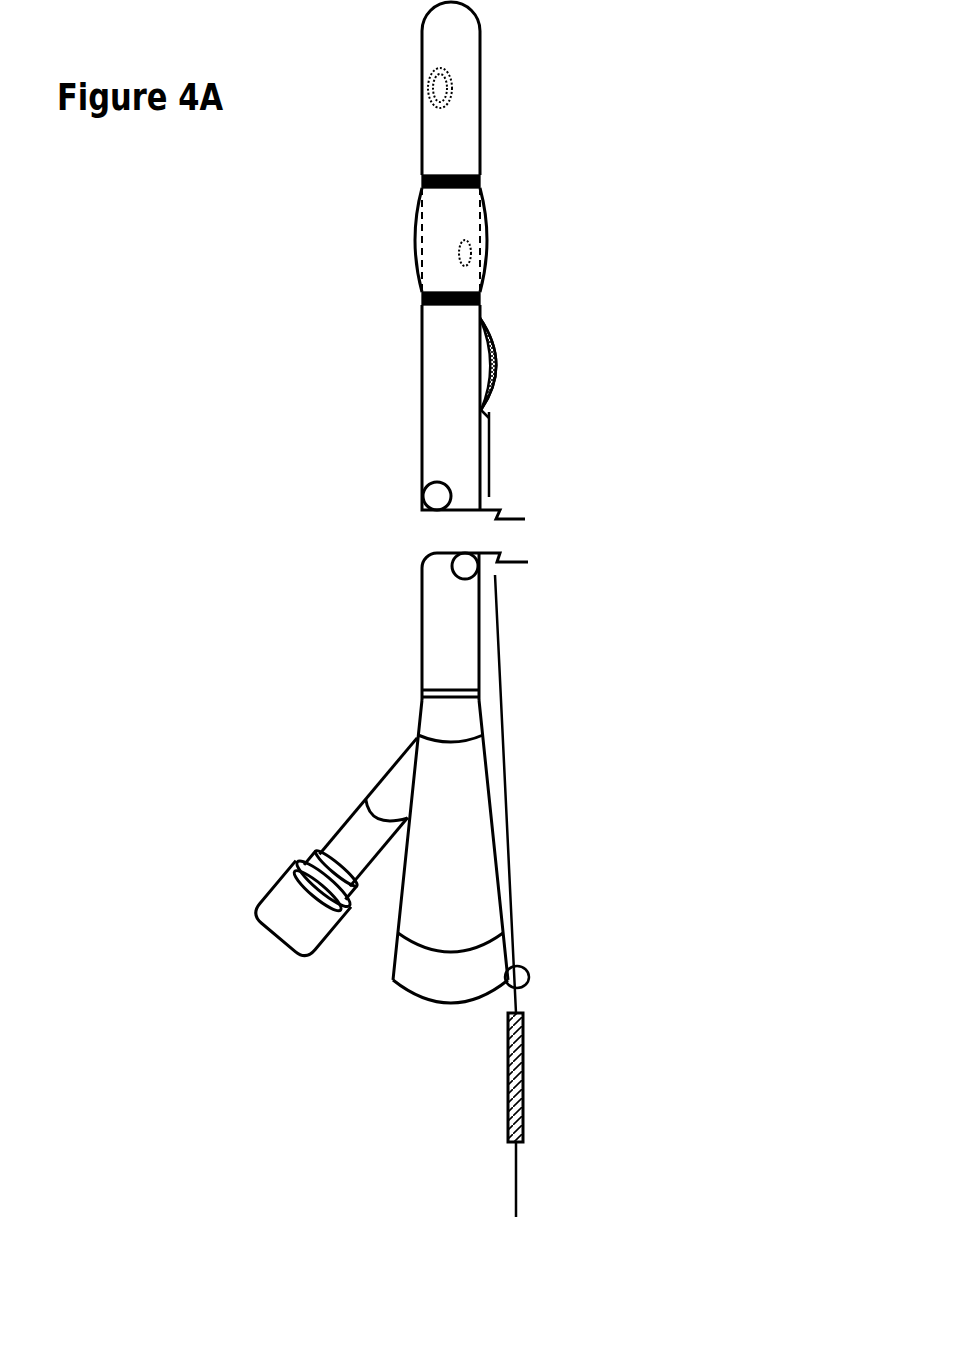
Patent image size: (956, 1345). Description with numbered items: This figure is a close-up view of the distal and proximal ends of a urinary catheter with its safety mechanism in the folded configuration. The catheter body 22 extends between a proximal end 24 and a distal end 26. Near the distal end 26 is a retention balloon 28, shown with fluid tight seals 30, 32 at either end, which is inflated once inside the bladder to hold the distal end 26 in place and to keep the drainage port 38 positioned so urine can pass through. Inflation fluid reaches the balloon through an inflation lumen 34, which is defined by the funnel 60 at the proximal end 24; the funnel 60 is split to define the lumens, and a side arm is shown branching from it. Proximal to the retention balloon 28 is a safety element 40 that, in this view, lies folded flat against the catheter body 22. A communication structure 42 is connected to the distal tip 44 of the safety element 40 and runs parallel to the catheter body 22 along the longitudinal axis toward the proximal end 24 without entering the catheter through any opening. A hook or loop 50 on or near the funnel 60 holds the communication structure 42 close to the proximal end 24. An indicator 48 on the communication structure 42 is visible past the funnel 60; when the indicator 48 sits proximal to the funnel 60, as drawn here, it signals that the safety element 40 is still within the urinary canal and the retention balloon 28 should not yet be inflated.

The catheter body 22 is at (422, 637).
The proximal end 24 is at (370, 727).
The distal end 26 is at (505, 28).
The retention balloon 28 is at (415, 242).
The fluid tight seal 30 is at (422, 181).
The fluid tight seal 32 is at (422, 297).
The inflation lumen 34 is at (472, 253).
The drainage port 38 is at (420, 90).
The safety element 40 is at (497, 358).
The communication structure 42 is at (490, 455).
The distal tip 44 is at (497, 407).
The indicator 48 is at (522, 1058).
The hook or loop 50 is at (533, 972).
The funnel 60 is at (497, 850).